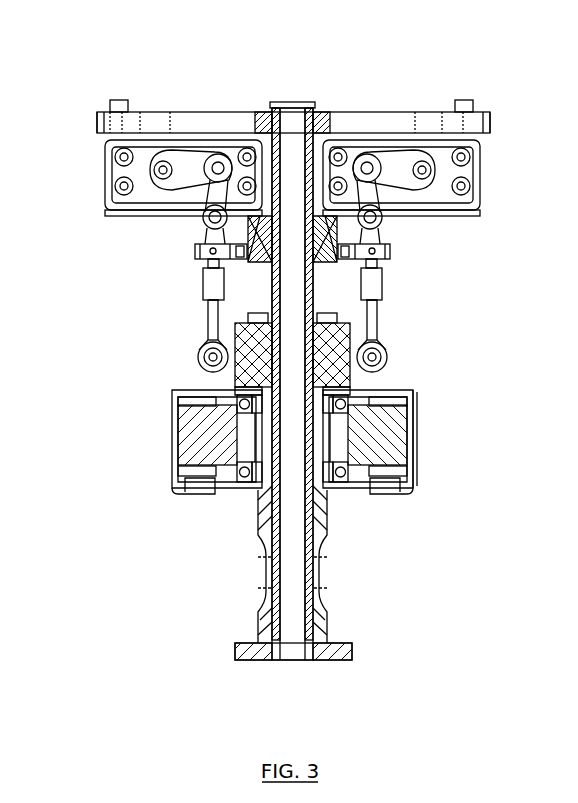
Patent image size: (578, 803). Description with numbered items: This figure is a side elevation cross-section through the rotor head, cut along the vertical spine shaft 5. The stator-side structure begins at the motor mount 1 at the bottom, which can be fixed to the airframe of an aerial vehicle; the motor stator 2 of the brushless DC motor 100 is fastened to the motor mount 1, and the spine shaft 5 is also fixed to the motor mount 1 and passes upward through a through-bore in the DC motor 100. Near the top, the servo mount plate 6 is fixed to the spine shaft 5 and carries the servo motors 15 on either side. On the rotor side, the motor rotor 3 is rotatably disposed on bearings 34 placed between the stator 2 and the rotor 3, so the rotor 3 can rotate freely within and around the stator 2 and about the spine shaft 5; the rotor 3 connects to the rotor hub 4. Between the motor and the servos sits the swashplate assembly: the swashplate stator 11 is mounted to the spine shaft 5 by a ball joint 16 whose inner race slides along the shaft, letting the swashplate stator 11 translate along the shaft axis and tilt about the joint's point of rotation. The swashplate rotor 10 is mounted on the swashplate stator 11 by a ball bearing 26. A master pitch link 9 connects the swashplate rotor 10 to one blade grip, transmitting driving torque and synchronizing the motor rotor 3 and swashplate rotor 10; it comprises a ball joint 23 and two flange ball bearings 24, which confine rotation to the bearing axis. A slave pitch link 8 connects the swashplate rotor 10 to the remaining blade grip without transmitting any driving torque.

The motor mount 1 is at (338, 662).
The motor stator 2 is at (182, 495).
The motor rotor 3 is at (162, 456).
The rotor hub 4 is at (414, 403).
The spine shaft 5 is at (327, 305).
The servo mount plate 6 is at (385, 108).
The slave pitch link 8 is at (389, 352).
The master pitch link 9 is at (200, 322).
The swashplate rotor 10 is at (260, 273).
The swashplate stator 11 is at (345, 282).
The servo motors 15 is at (125, 155).
The ball joint 16 is at (232, 272).
The ball joint 23 is at (195, 238).
The flange ball bearings 24 is at (198, 363).
The ball bearing 26 is at (205, 251).
The bearings 34 is at (246, 488).
The brushless DC motor 100 is at (425, 450).